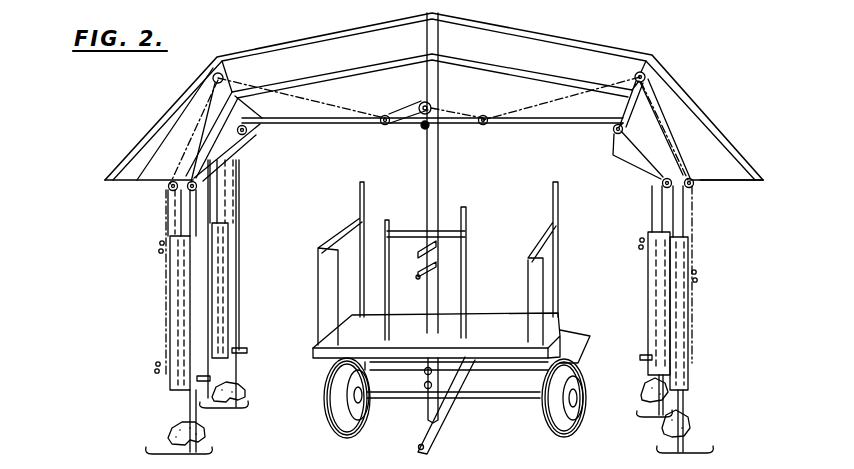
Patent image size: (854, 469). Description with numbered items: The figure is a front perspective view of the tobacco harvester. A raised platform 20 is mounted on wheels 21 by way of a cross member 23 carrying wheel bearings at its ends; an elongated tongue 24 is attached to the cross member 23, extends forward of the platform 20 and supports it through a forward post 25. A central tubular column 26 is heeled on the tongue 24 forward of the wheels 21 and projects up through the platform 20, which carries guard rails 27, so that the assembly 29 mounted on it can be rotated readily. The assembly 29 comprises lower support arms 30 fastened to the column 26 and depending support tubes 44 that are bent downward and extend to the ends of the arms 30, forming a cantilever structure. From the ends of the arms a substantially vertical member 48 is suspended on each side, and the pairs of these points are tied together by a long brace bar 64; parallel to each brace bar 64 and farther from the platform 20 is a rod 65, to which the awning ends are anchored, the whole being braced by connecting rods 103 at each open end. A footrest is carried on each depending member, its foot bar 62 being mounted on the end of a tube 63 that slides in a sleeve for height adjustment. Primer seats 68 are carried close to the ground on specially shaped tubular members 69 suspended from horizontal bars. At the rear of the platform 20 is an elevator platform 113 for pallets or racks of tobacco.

The assembly 29 is at (767, 120).
The connecting rods 103 is at (341, 32).
The depending support tubes 44 is at (347, 75).
The lower support arms 30 is at (353, 123).
The brace bar 64 is at (233, 158).
The rod 65 is at (735, 182).
The vertical member 48 is at (180, 208).
The tubular member 69 is at (234, 298).
The tube 63 is at (182, 405).
The foot bar 62 is at (163, 449).
The primer seats 68 is at (203, 437).
The raised platform 20 is at (313, 353).
The elevator platform 113 is at (573, 345).
The wheels 21 is at (335, 411).
The cross member 23 is at (480, 397).
The central tubular column 26 is at (427, 193).
The forward post 25 is at (428, 403).
The tongue 24 is at (430, 433).
The guard rails 27 is at (335, 236).